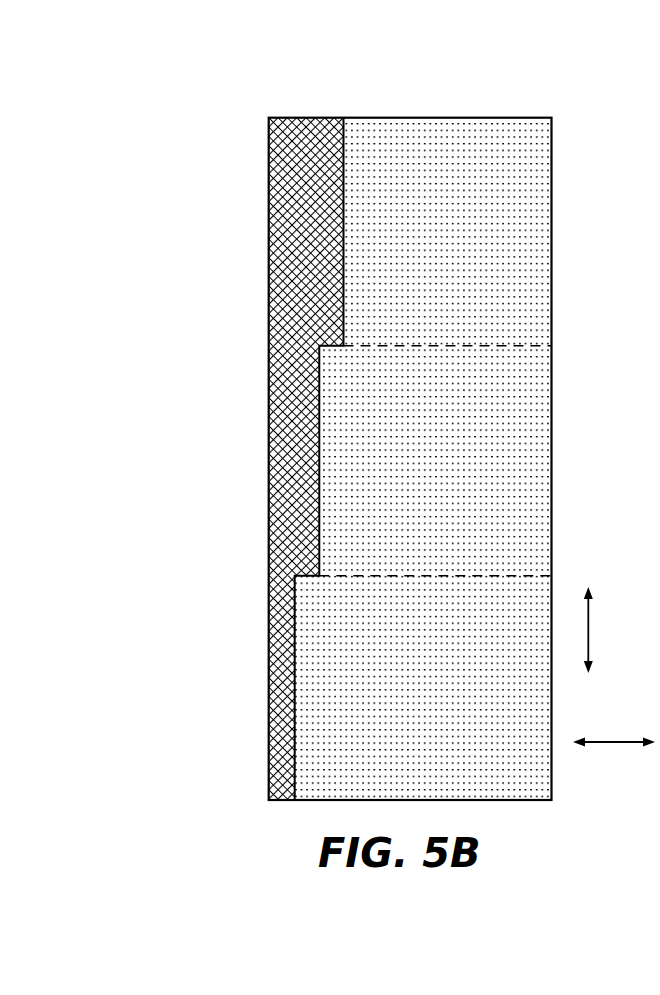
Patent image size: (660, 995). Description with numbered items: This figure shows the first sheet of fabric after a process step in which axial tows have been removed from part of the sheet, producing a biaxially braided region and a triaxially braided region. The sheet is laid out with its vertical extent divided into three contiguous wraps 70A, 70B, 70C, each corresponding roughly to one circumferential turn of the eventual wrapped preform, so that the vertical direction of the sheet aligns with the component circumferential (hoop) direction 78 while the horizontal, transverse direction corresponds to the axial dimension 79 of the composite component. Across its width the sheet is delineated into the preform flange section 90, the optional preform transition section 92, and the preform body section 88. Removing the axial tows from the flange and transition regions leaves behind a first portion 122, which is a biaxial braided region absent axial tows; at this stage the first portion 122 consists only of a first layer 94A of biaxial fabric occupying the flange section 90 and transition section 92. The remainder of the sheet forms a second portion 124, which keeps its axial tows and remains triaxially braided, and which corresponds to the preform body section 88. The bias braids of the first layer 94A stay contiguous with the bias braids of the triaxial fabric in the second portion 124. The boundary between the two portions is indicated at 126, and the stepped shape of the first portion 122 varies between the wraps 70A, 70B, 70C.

The first layer 94A is at (391, 425).
The preform flange section 90 is at (294, 84).
The preform transition section 92 is at (340, 84).
The preform body section 88 is at (552, 84).
The first wrap 70A is at (240, 117).
The second wrap 70B is at (240, 346).
The third wrap 70C is at (240, 576).
The first portion 122 is at (325, 246).
The second portion 124 is at (473, 246).
The region boundary 126 is at (572, 328).
The circumferential (hoop) direction 78 is at (590, 630).
The axial dimension 79 is at (617, 740).